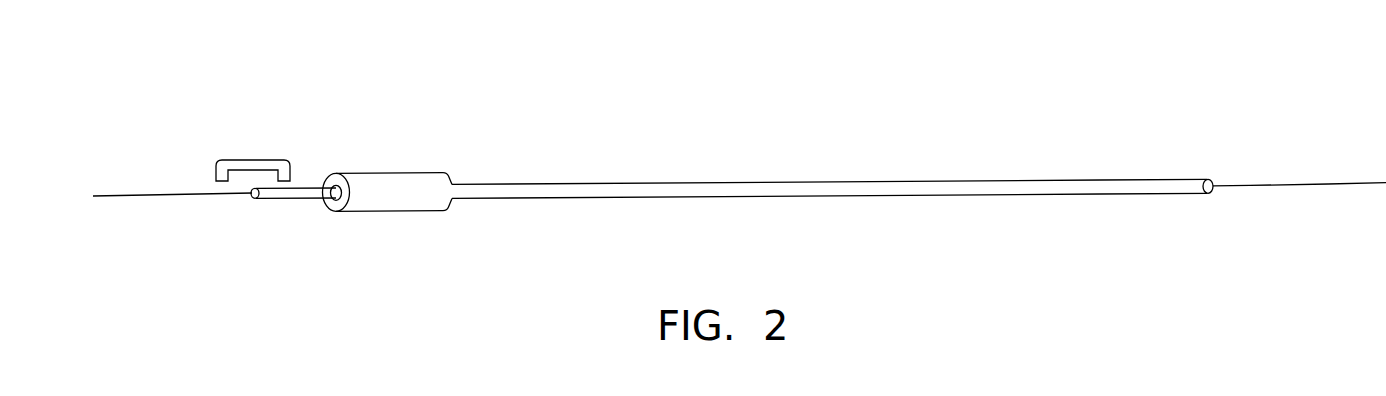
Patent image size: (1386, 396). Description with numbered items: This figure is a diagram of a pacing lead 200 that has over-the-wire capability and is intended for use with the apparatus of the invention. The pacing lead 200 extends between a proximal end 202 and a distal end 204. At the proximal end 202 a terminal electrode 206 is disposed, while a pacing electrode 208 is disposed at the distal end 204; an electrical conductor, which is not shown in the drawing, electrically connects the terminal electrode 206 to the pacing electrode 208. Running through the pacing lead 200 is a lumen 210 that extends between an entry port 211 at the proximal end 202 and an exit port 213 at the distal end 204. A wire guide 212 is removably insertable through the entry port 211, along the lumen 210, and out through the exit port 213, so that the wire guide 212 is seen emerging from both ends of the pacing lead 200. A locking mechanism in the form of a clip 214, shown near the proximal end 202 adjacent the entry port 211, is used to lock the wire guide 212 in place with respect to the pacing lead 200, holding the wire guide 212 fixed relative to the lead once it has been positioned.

The pacing lead 200 is at (842, 124).
The proximal end 202 is at (450, 209).
The distal end 204 is at (1210, 203).
The terminal electrode 206 is at (293, 199).
The pacing electrode 208 is at (1210, 180).
The lumen 210 is at (1216, 192).
The entry port 211 is at (252, 196).
The wire guide 212 is at (141, 192).
The exit port 213 is at (1217, 181).
The clip 214 is at (262, 158).